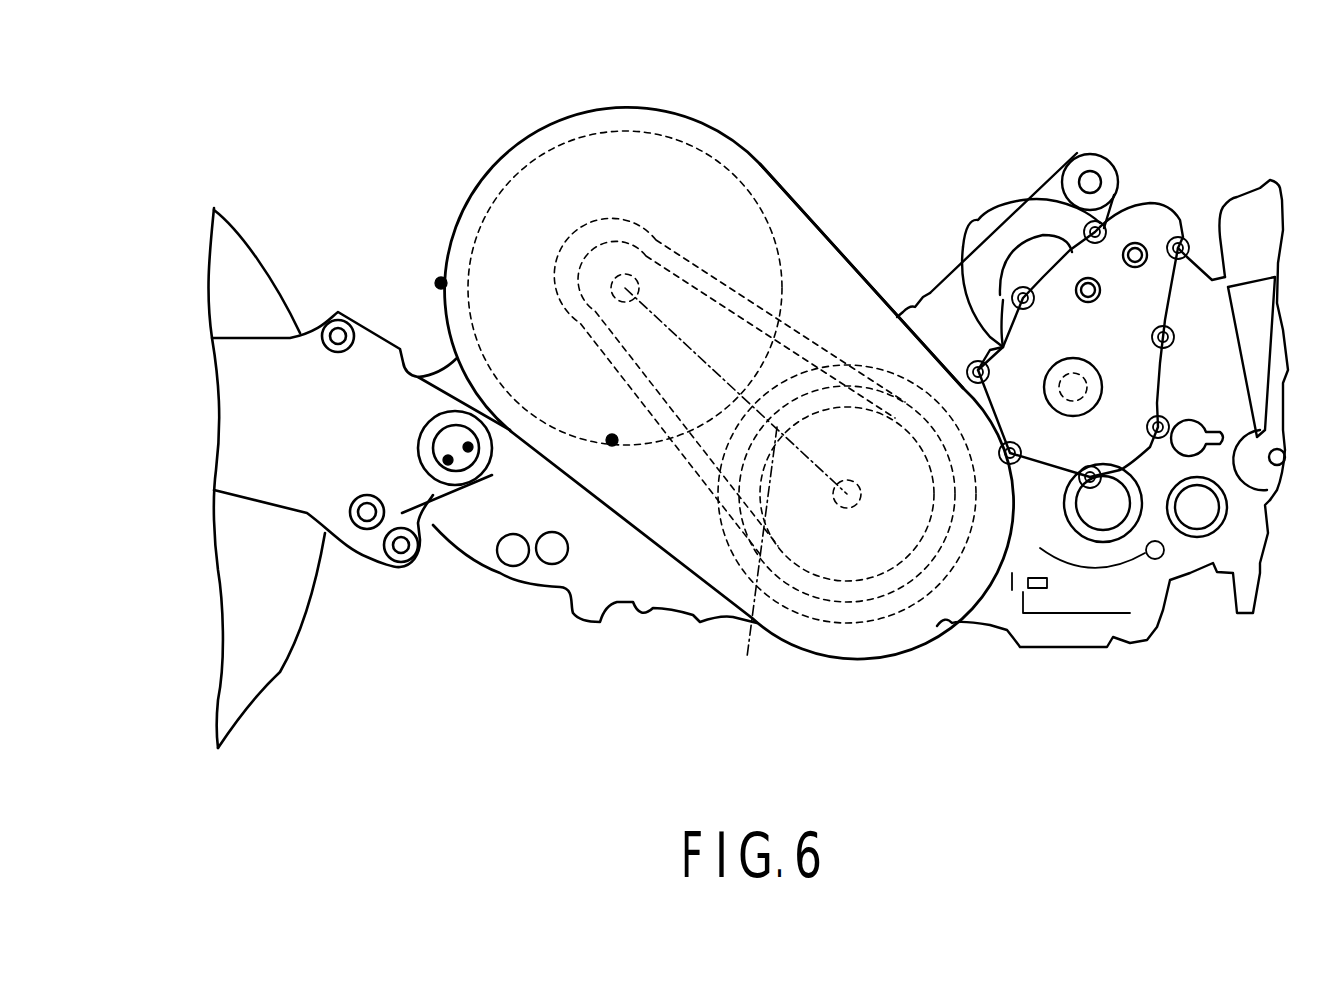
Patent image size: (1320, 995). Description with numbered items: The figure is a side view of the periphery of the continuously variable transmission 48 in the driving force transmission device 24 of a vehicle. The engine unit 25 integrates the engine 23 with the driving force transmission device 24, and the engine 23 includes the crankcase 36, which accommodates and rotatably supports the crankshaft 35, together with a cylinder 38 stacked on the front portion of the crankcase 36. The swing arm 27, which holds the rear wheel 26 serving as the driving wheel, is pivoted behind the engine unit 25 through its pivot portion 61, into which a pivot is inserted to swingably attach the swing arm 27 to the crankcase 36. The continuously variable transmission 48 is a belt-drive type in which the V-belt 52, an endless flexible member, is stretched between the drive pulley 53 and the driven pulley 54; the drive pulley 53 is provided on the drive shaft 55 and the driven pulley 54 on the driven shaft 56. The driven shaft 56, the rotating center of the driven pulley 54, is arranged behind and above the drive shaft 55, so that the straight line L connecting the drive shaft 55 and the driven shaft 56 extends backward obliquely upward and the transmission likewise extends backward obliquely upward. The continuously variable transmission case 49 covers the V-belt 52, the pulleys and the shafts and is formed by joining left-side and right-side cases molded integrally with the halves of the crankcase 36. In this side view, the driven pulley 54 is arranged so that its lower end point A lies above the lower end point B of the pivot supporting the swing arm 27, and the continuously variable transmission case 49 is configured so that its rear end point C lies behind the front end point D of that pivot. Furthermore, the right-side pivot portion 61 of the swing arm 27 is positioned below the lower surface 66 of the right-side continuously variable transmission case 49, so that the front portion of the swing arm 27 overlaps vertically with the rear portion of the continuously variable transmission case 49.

The engine 23 is at (1186, 620).
The driving force transmission device 24 is at (780, 660).
The engine unit 25 is at (1046, 660).
The rear wheel 26 is at (280, 672).
The swing arm 27 is at (263, 377).
The crankshaft 35 is at (1075, 357).
The crankcase 36 is at (1020, 223).
The cylinder 38 is at (1253, 293).
The continuously variable transmission 48 is at (785, 228).
The continuously variable transmission case 49 is at (712, 127).
The V-belt 52 is at (820, 353).
The drive pulley 53 is at (893, 617).
The driven pulley 54 is at (571, 138).
The drive shaft 55 is at (847, 508).
The driven shaft 56 is at (625, 274).
The pivot portion 61 is at (519, 478).
The lower surface 66 is at (531, 470).
The lower end point A is at (612, 446).
The lower end point B is at (448, 464).
The rear end point C is at (435, 282).
The front end point D is at (469, 452).
The straight line L is at (754, 568).